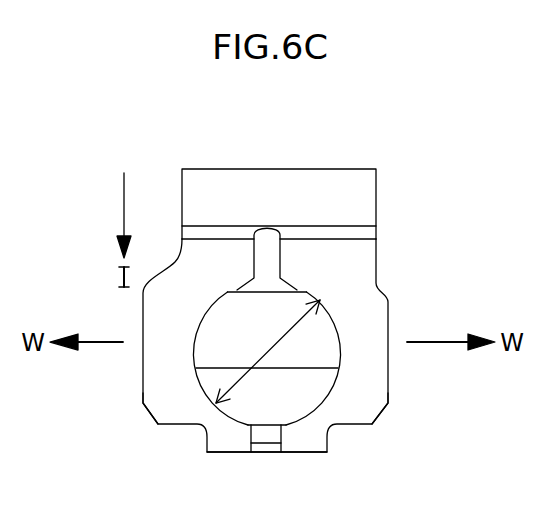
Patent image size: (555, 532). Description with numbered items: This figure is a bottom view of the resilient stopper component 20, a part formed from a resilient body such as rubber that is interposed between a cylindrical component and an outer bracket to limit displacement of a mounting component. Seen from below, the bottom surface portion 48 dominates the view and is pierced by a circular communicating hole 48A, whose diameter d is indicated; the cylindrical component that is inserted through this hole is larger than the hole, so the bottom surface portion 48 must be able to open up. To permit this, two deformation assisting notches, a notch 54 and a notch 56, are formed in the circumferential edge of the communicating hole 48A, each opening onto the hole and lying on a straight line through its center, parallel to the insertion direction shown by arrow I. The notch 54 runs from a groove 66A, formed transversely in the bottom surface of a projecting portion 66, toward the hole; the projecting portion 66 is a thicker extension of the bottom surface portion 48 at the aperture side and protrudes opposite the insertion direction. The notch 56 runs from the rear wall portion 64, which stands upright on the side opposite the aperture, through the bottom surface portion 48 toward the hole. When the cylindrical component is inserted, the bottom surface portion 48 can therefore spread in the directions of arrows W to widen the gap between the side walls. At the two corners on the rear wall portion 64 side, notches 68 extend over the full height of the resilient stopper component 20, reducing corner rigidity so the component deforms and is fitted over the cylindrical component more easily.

The resilient stopper component 20 is at (468, 258).
The bottom surface portion 48 is at (393, 318).
The communicating hole 48A is at (340, 345).
The notch 54 is at (270, 228).
The notch 56 is at (268, 432).
The rear wall portion 64 is at (262, 453).
The projecting portion 66 is at (379, 195).
The groove 66A is at (376, 233).
The notches 68 is at (190, 440).